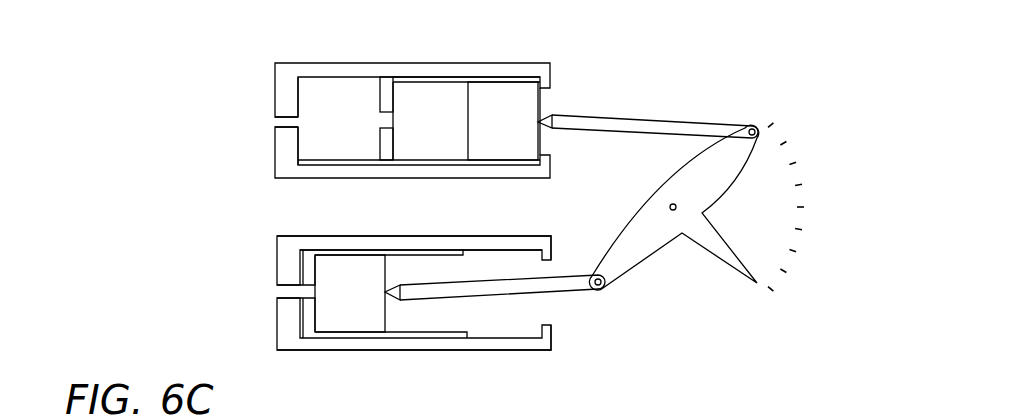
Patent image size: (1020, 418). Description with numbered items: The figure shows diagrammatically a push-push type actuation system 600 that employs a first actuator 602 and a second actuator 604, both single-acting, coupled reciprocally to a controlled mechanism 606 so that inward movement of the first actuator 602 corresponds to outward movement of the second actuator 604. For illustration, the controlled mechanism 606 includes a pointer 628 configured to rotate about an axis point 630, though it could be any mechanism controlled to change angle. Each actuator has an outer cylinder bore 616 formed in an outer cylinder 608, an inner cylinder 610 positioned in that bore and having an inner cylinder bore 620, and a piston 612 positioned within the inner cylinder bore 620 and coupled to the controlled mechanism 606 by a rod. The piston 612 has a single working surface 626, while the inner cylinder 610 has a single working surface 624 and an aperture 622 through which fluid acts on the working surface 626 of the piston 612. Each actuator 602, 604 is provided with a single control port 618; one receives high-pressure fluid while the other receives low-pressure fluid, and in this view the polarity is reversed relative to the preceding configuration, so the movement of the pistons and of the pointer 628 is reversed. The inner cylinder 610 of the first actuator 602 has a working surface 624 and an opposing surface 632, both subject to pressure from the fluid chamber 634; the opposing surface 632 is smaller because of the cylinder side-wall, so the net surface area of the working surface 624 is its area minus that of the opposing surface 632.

The push-push type actuation system 600 is at (306, 41).
The first actuator 602 is at (201, 132).
The second actuator 604 is at (180, 253).
The controlled mechanism 606 is at (850, 136).
The outer cylinder 608 is at (387, 70).
The inner cylinder 610 is at (388, 147).
The piston 612 is at (508, 102).
The outer cylinder bore 616 is at (352, 164).
The control port 618 is at (288, 127).
The inner cylinder bore 620 is at (447, 253).
The aperture 622 is at (387, 127).
The working surface 624 is at (378, 98).
The working surface 626 is at (468, 130).
The pointer 628 is at (643, 255).
The axis point 630 is at (671, 205).
The opposing surface 632 is at (402, 97).
The fluid chamber 634 is at (318, 103).